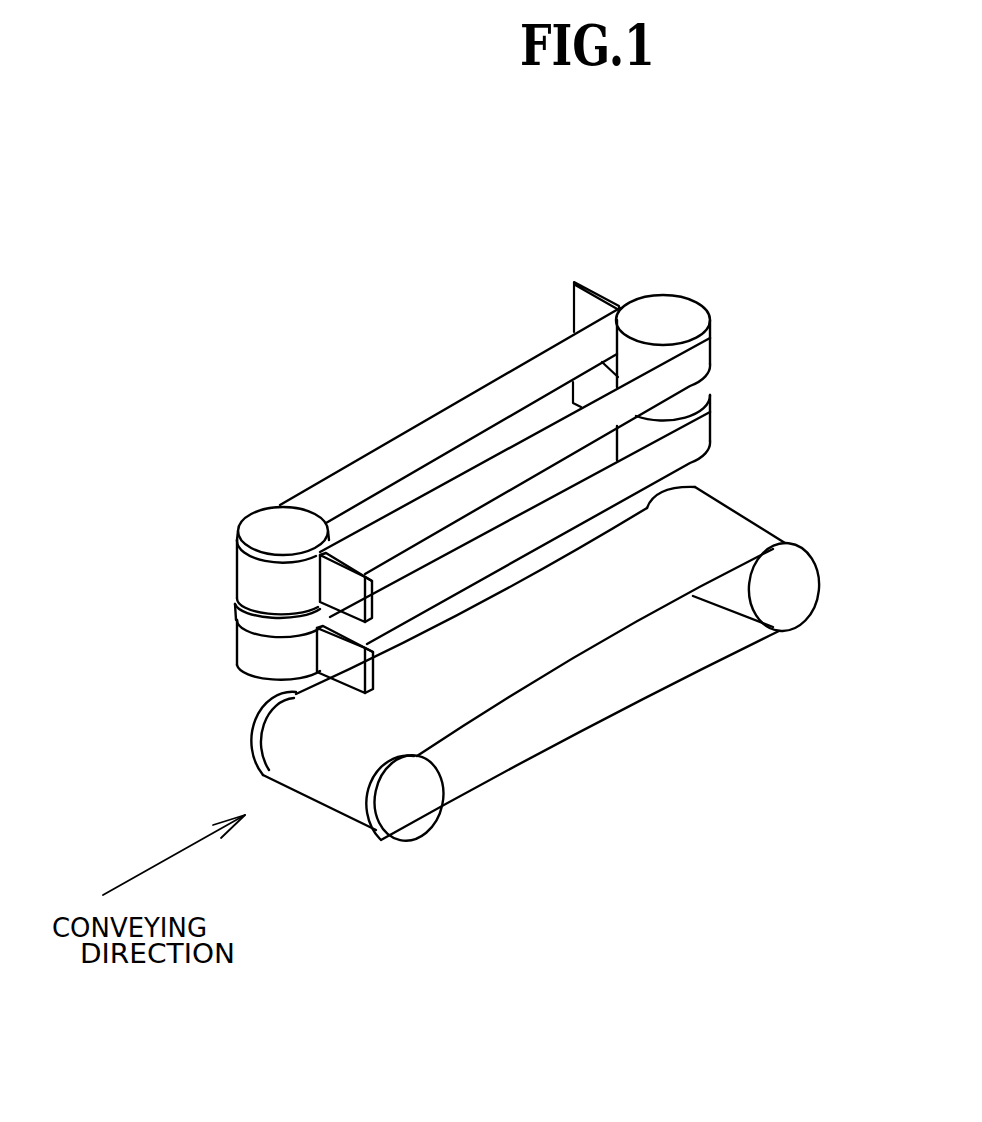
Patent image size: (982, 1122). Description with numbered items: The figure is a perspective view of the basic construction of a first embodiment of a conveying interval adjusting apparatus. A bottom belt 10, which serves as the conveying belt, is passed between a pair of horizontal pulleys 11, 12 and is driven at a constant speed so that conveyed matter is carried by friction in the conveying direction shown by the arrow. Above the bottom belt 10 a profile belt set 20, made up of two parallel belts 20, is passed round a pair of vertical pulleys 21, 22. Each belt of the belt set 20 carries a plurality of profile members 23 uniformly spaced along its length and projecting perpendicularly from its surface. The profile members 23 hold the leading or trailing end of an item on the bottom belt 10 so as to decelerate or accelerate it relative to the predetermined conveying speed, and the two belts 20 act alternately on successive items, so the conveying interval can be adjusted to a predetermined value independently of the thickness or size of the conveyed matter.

The bottom belt 10 is at (561, 650).
The horizontal pulley 11 is at (408, 803).
The horizontal pulley 12 is at (795, 602).
The profile belt set 20 is at (492, 545).
The vertical pulley 21 is at (260, 523).
The vertical pulley 22 is at (692, 318).
The profile member 23 is at (600, 288).